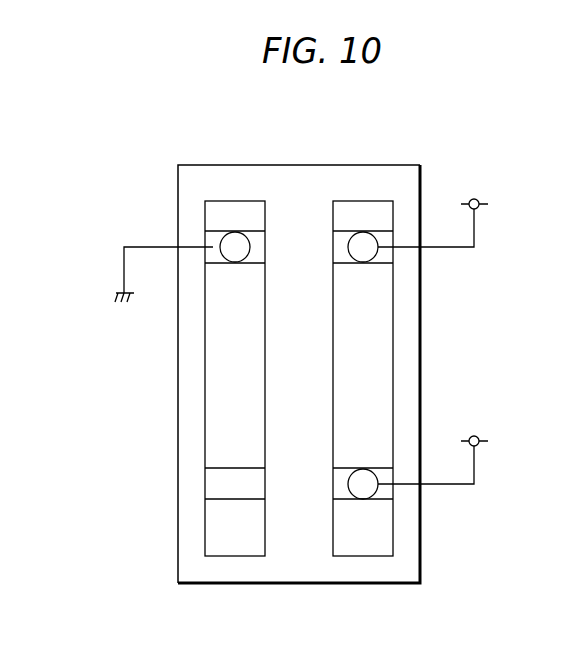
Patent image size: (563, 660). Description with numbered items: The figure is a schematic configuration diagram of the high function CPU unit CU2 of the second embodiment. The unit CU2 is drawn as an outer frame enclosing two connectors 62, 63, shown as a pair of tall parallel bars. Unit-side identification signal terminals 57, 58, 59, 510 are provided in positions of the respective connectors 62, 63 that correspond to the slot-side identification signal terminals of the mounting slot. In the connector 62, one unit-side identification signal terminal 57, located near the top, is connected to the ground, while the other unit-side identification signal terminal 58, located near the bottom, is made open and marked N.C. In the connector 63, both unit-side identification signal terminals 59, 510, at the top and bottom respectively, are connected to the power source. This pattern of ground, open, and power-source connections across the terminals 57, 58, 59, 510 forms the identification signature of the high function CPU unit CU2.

The high function CPU unit CU2 is at (321, 136).
The connector 62 is at (222, 201).
The connector 63 is at (380, 201).
The unit-side identification signal terminal 57 is at (213, 240).
The unit-side identification signal terminal 58 is at (208, 490).
The unit-side identification signal terminal 59 is at (385, 256).
The unit-side identification signal terminal 510 is at (385, 492).